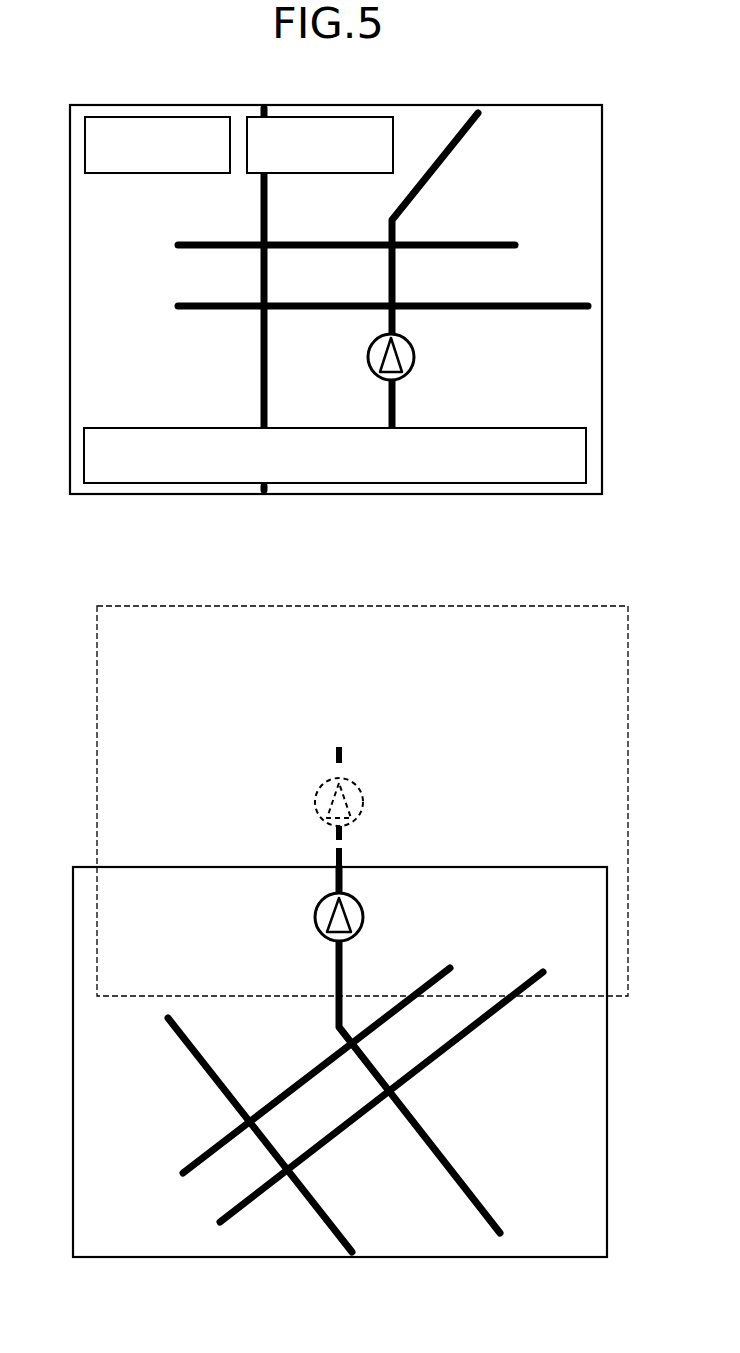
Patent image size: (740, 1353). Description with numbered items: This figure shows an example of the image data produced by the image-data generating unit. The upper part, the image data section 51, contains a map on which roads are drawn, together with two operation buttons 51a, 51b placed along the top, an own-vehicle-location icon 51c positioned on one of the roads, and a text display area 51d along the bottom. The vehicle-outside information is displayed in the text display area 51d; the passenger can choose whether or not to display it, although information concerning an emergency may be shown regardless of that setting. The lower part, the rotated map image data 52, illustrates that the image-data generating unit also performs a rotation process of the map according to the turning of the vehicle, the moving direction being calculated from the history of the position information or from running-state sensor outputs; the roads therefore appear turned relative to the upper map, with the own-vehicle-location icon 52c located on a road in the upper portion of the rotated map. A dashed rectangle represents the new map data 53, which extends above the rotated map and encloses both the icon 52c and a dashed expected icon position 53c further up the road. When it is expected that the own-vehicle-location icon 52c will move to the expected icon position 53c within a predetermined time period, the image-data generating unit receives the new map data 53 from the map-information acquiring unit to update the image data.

The image data section 51 is at (408, 105).
The operation button 51a is at (156, 174).
The operation button 51b is at (315, 174).
The own-vehicle-location icon 51c is at (415, 357).
The text display area 51d is at (471, 428).
The rotated map image data 52 is at (73, 925).
The own-vehicle-location icon 52c is at (363, 917).
The new map data 53 is at (478, 606).
The expected icon position 53c is at (363, 802).